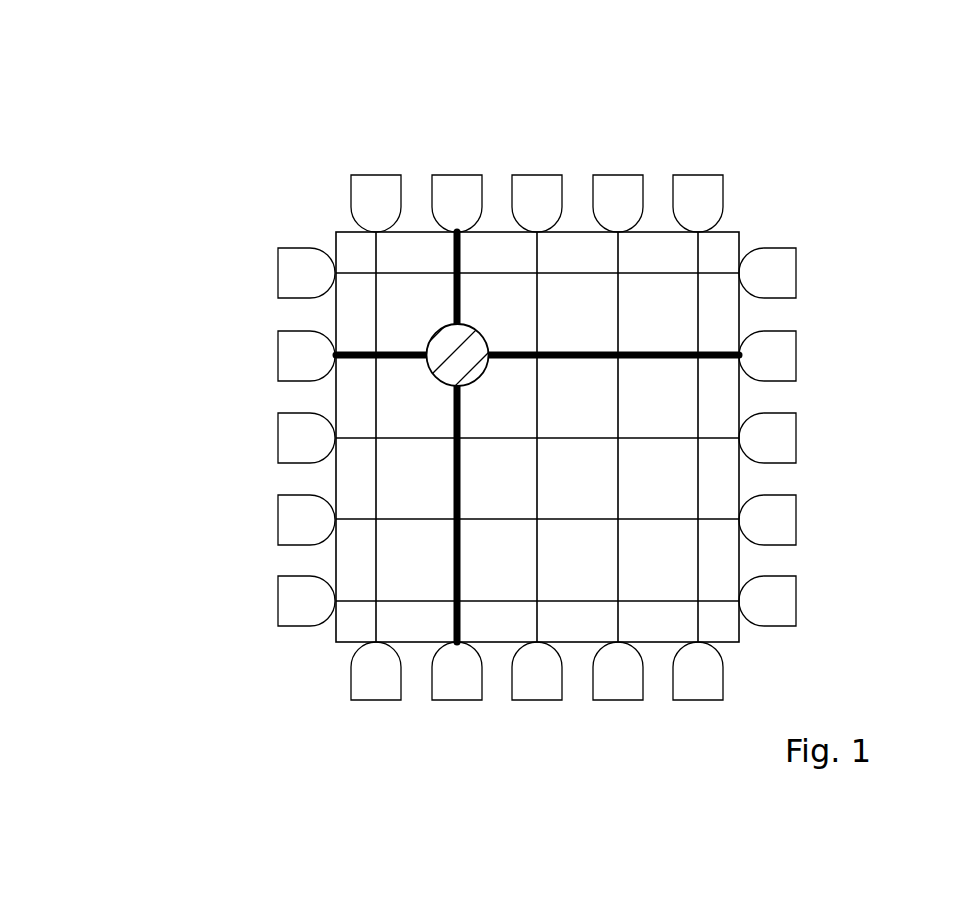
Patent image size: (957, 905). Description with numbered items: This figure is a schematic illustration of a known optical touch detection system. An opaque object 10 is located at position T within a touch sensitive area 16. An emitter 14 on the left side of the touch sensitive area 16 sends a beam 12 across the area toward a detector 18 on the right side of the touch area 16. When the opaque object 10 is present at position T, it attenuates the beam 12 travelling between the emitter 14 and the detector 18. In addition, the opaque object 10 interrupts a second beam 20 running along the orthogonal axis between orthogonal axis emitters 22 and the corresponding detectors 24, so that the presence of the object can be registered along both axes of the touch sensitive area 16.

The opaque object 10 is at (427, 343).
The beam 12 is at (663, 352).
The emitter 14 is at (277, 357).
The touch sensitive area 16 is at (721, 253).
The detector 18 is at (797, 360).
The vertical conductor line 20 is at (453, 495).
The orthogonal axis emitters 22 is at (458, 700).
The detectors 24 is at (457, 175).